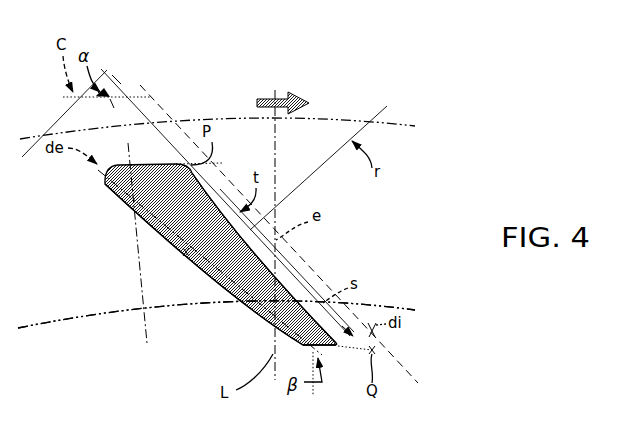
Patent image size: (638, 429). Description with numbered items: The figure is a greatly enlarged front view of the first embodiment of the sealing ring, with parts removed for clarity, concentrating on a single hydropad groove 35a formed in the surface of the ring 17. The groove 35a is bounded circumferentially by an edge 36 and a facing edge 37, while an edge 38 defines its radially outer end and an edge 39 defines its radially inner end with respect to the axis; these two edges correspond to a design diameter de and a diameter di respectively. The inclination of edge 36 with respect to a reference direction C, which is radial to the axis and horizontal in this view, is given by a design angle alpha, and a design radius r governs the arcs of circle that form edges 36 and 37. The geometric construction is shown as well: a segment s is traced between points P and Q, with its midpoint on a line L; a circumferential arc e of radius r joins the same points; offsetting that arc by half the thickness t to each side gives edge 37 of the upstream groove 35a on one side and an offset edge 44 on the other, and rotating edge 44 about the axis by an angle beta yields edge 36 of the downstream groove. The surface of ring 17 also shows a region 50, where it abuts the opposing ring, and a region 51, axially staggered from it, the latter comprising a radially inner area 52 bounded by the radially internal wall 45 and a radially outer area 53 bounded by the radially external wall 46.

The ring 17 is at (329, 107).
The groove 35a is at (148, 152).
The edge 36 is at (234, 298).
The edge 37 is at (294, 288).
The edge 38 is at (160, 163).
The edge 39 is at (328, 352).
The offset edge 44 is at (185, 262).
The radially internal wall 45 is at (82, 306).
The radially external wall 46 is at (398, 118).
The region 50 is at (417, 201).
The region 51 is at (367, 90).
The radially inner area 52 is at (124, 311).
The radially outer area 53 is at (229, 107).